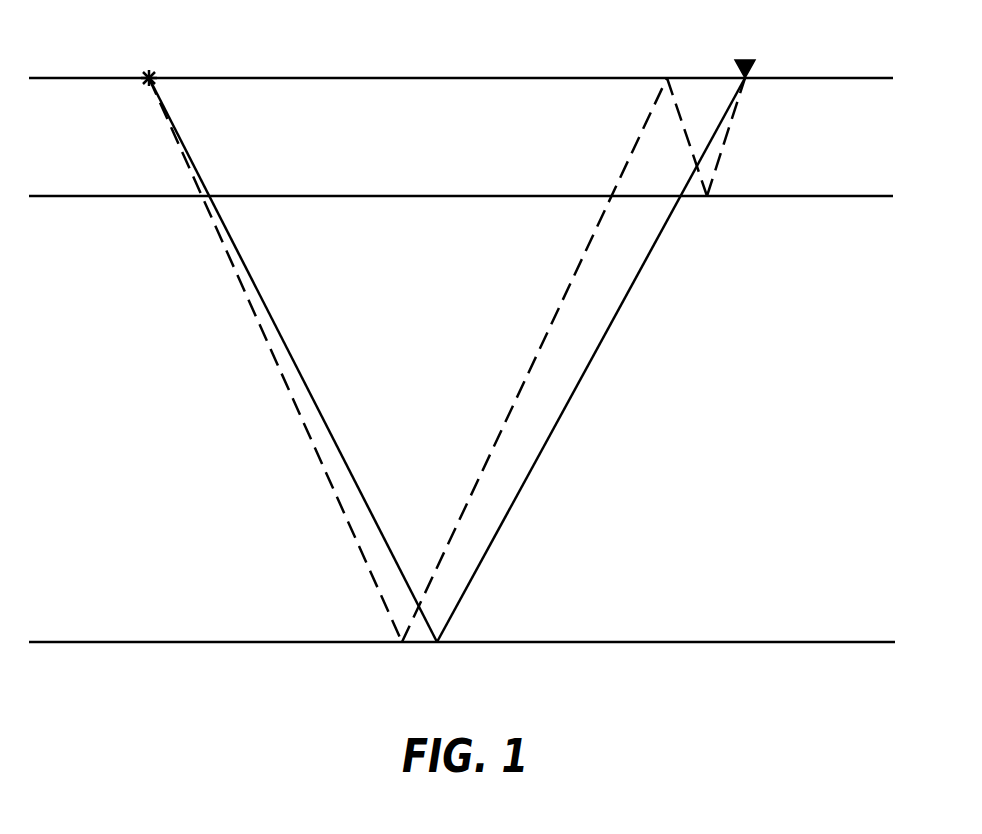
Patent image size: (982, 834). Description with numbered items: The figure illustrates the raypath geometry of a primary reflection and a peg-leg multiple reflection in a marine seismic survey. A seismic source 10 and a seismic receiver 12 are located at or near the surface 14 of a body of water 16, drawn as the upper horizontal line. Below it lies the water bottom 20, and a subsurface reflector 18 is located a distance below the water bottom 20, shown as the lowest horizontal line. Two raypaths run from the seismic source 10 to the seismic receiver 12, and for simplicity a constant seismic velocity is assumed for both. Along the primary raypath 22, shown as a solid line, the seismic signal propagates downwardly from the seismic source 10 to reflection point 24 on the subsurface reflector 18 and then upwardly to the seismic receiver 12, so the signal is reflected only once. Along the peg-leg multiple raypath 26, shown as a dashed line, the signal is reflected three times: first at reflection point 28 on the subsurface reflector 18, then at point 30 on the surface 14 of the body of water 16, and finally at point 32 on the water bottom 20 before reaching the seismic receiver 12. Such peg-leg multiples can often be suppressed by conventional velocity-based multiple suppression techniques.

The seismic source 10 is at (146, 40).
The seismic receiver 12 is at (746, 40).
The surface 14 is at (403, 78).
The body of water 16 is at (824, 135).
The subsurface reflector 18 is at (656, 642).
The water bottom 20 is at (404, 196).
The primary raypath 22 is at (290, 348).
The reflection point 24 is at (436, 645).
The peg-leg multiple raypath 26 is at (282, 376).
The reflection point 28 is at (401, 645).
The point 30 is at (666, 77).
The point 32 is at (707, 198).